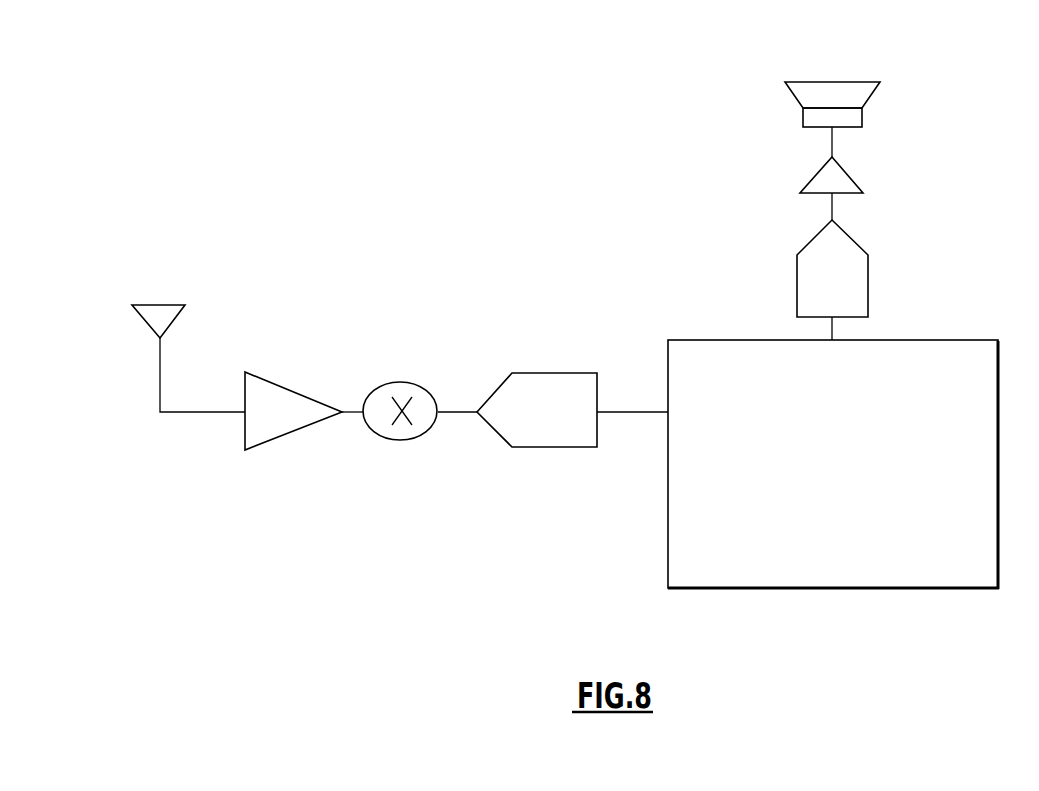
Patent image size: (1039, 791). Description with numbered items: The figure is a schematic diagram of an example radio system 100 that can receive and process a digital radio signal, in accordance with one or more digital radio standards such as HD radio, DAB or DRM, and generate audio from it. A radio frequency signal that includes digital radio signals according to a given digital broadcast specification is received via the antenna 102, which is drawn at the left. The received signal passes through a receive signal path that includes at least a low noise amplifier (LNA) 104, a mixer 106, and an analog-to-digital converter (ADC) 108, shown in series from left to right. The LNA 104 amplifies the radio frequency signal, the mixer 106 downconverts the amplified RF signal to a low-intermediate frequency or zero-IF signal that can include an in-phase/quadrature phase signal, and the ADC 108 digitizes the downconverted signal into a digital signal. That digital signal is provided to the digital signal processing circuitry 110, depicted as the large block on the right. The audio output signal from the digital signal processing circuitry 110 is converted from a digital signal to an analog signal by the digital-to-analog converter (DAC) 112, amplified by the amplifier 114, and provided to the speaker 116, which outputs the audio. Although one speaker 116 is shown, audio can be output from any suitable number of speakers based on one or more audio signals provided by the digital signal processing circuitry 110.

The radio system 100 is at (117, 130).
The antenna 102 is at (152, 305).
The low noise amplifier (LNA) 104 is at (278, 382).
The mixer 106 is at (408, 382).
The analog-to-digital converter (ADC) 108 is at (543, 373).
The digital signal processing circuitry 110 is at (855, 538).
The digital-to-analog converter (DAC) 112 is at (868, 295).
The amplifier 114 is at (852, 175).
The speaker 116 is at (862, 110).